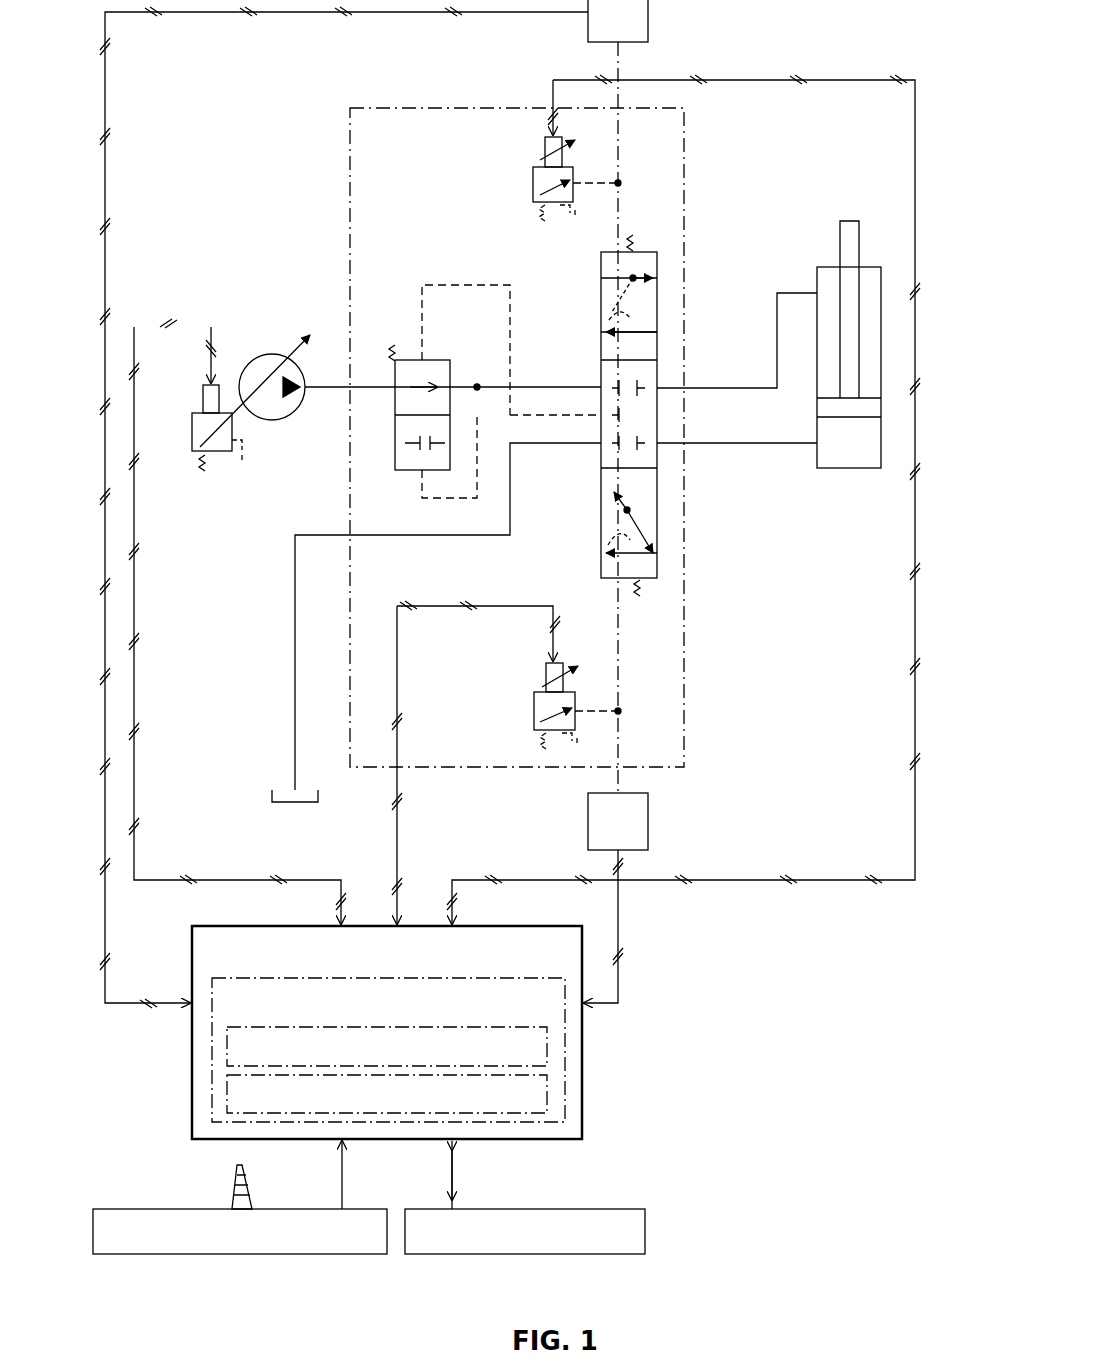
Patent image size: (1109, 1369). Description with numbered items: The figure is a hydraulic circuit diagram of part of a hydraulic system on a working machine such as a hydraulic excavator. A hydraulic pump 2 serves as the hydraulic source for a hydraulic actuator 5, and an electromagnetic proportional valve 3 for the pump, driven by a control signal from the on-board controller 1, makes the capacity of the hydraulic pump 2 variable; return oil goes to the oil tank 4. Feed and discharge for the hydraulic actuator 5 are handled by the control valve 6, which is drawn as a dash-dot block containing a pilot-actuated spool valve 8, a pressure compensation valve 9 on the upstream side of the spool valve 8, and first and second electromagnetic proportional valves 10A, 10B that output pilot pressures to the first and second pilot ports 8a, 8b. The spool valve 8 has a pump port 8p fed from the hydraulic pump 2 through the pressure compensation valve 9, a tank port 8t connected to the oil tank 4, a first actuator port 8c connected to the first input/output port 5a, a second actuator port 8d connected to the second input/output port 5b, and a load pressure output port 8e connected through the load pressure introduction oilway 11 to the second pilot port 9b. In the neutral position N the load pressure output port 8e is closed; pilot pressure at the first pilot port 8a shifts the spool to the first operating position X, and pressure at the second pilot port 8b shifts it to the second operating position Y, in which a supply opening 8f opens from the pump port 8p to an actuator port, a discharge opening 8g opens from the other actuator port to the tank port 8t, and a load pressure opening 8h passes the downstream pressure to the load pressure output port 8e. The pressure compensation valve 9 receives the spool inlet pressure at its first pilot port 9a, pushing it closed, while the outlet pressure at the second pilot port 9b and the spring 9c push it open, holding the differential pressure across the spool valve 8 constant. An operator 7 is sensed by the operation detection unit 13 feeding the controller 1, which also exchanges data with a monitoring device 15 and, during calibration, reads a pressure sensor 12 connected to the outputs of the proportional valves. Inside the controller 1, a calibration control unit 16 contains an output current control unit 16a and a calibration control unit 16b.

The controller 1 is at (387, 1032).
The hydraulic pump 2 is at (270, 354).
The electromagnetic proportional valve for a pump 3 is at (195, 432).
The oil tank 4 is at (300, 804).
The hydraulic actuator 5 is at (885, 275).
The first input/output port 5a is at (816, 295).
The second input/output port 5b is at (816, 455).
The control valve 6 is at (415, 108).
The operator 7 is at (235, 1178).
The spool valve 8 is at (598, 272).
The first pilot port 8a is at (620, 250).
The second pilot port 8b is at (622, 582).
The first actuator port 8c is at (657, 386).
The second actuator port 8d is at (657, 446).
The load pressure output port 8e is at (601, 446).
The supply opening 8f is at (618, 278).
The discharge opening 8g is at (634, 332).
The load pressure opening 8h is at (608, 318).
The pump port 8p is at (601, 384).
The tank port 8t is at (601, 478).
The pressure compensation valve 9 is at (393, 410).
The first pilot port 9a is at (420, 470).
The second pilot port 9b is at (423, 358).
The spring 9c is at (392, 343).
The first electromagnetic proportional valve 10A is at (533, 185).
The second electromagnetic proportional valve 10B is at (534, 705).
The load pressure introduction oilway 11 is at (467, 285).
The pressure sensor 12 is at (648, 12).
The operation detection unit 13 is at (240, 1197).
The monitoring device 15 is at (525, 1197).
The calibration control unit 16 is at (388, 1050).
The output current control unit 16a is at (387, 1046).
The calibration control unit 16b is at (387, 1094).
The first operating position X is at (657, 298).
The second operating position Y is at (657, 530).
The neutral position N is at (657, 416).